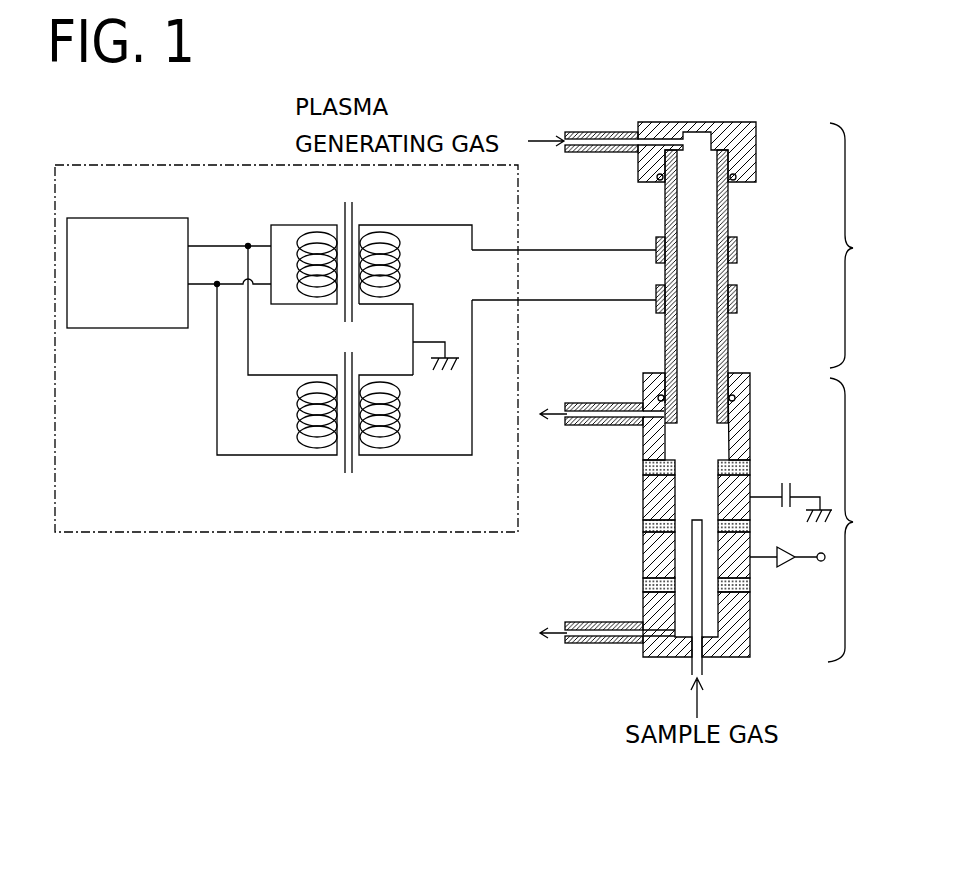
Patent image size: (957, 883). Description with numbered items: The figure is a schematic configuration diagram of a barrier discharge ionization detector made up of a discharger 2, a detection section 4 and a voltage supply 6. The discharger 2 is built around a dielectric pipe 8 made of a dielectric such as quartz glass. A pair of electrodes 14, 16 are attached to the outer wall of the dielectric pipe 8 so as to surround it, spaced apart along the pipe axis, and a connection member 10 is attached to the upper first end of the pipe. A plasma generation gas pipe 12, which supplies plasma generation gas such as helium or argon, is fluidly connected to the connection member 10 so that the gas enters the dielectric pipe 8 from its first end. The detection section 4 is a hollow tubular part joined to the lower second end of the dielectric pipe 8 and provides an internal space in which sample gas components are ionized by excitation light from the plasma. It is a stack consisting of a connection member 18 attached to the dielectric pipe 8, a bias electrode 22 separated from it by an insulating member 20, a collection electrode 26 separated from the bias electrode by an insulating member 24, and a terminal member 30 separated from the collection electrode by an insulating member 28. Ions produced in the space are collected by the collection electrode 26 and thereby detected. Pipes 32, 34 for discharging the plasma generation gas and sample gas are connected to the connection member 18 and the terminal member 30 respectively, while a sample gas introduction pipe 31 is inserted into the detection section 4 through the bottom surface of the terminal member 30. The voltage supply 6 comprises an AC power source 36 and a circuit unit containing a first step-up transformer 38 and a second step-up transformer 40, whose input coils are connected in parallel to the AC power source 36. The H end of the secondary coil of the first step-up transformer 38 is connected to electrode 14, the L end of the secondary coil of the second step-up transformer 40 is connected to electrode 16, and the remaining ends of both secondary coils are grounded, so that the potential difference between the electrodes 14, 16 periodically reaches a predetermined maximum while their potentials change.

The discharger 2 is at (853, 245).
The detection section 4 is at (852, 520).
The voltage supply 6 is at (213, 165).
The dielectric pipe 8 is at (731, 218).
The connection member 10 is at (735, 121).
The plasma generation gas pipe 12 is at (603, 131).
The electrode 14 is at (656, 243).
The electrode 16 is at (657, 315).
The connection member 18 is at (752, 392).
The insulating member 20 is at (643, 466).
The bias electrode 22 is at (655, 502).
The insulating member 24 is at (658, 527).
The collection electrode 26 is at (655, 558).
The insulating member 28 is at (650, 585).
The terminal member 30 is at (740, 638).
The sample gas introduction pipe 31 is at (703, 602).
The pipe 32 is at (602, 400).
The pipe 34 is at (602, 645).
The AC power source 36 is at (155, 218).
The first step-up transformer 38 is at (363, 193).
The second step-up transformer 40 is at (363, 498).